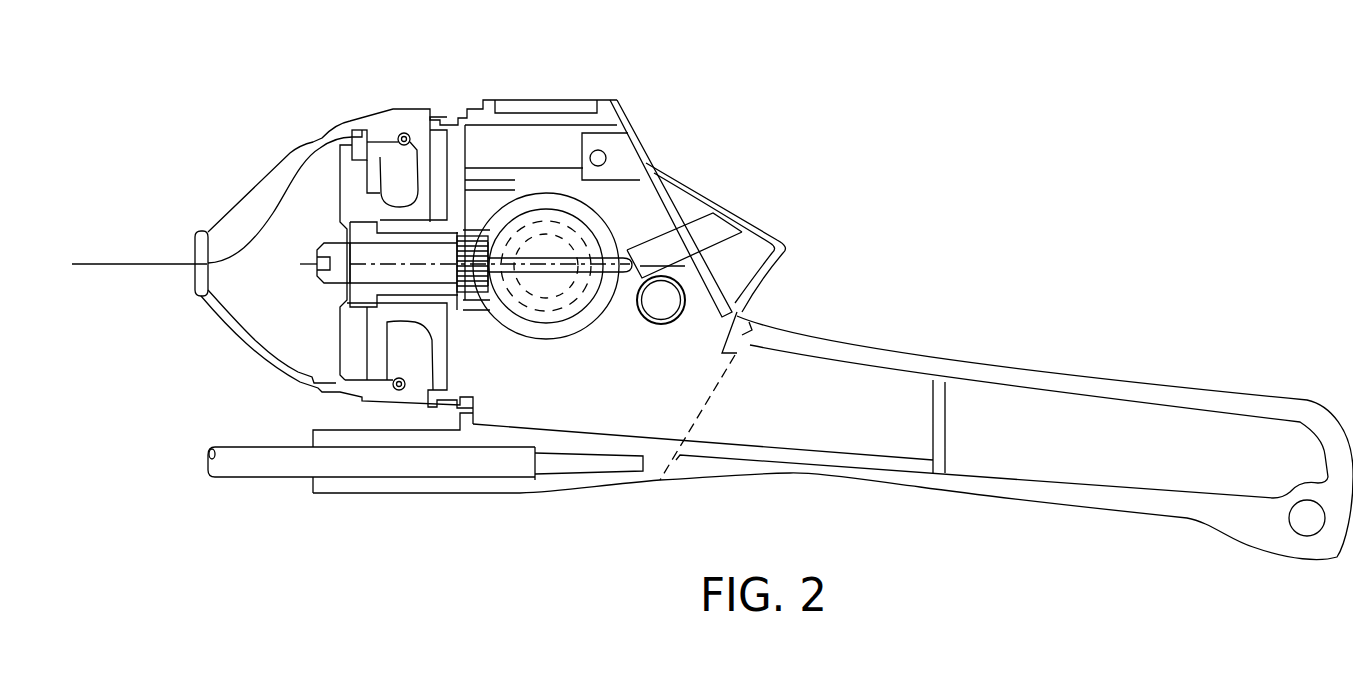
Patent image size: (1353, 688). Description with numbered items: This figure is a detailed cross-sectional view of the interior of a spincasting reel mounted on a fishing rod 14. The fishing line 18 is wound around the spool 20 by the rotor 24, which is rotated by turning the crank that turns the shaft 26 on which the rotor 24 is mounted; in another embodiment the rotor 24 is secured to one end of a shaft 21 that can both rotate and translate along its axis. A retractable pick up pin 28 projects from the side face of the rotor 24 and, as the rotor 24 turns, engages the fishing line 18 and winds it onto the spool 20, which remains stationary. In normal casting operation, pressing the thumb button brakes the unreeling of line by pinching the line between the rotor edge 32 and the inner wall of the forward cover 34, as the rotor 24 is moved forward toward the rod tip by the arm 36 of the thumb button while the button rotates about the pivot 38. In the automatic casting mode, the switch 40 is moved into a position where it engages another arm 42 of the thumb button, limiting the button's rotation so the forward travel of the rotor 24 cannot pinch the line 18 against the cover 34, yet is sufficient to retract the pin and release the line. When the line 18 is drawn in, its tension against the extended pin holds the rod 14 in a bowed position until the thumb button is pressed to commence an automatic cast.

The rod 14 is at (256, 478).
The fishing line 18 is at (130, 263).
The spool 20 is at (418, 383).
The shaft 21 is at (557, 285).
The rotor 24 is at (334, 340).
The shaft 26 is at (357, 130).
The retractable pick up pin 28 is at (388, 140).
The rotor edge 32 is at (340, 383).
The forward cover 34 is at (248, 181).
The arm 36 is at (692, 212).
The pivot 38 is at (608, 158).
The switch 40 is at (661, 324).
The arm 42 is at (771, 276).